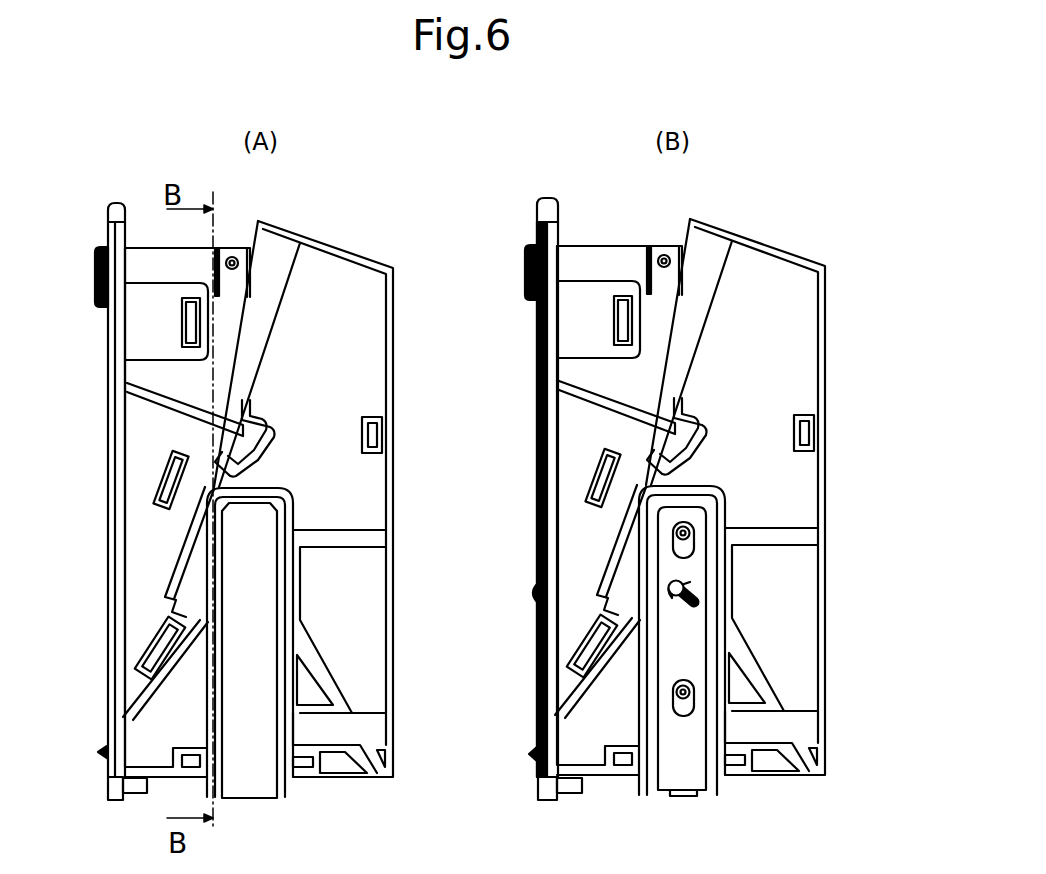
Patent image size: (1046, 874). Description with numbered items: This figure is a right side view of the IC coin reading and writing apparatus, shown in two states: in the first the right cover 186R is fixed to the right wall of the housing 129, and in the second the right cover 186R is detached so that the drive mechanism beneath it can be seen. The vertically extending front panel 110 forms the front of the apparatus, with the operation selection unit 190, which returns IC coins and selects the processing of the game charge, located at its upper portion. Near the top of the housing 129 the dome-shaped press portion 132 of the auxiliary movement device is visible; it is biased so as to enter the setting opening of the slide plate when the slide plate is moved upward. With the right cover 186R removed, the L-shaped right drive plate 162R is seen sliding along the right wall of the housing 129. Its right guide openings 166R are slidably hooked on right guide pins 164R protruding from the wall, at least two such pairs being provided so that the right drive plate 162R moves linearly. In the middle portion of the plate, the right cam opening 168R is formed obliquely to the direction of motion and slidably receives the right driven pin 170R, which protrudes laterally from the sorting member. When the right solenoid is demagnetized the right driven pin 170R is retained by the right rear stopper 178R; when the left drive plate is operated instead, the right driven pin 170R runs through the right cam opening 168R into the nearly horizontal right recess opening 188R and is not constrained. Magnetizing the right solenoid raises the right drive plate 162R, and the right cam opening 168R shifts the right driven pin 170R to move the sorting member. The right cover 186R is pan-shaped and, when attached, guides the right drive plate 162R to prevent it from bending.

The front panel 110 is at (536, 378).
The housing 129 is at (343, 252).
The press portion 132 is at (233, 258).
The right drive plate 162R is at (665, 772).
The right guide pin 164R is at (679, 531).
The right guide opening 166R is at (673, 548).
The right cam opening 168R is at (695, 601).
The right driven pin 170R is at (668, 588).
The right rear stopper 178R is at (690, 584).
The right cover 186R is at (262, 773).
The right recess opening 188R is at (683, 592).
The operation selection unit 190 is at (500, 278).